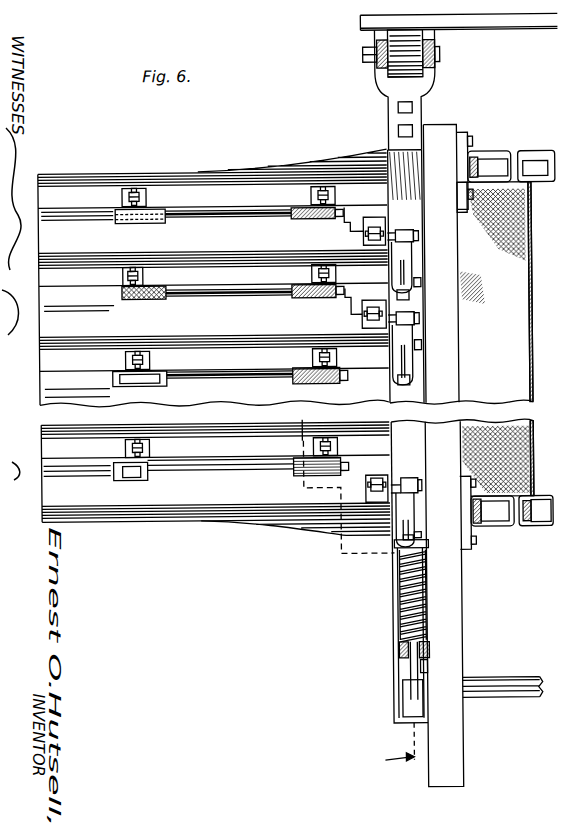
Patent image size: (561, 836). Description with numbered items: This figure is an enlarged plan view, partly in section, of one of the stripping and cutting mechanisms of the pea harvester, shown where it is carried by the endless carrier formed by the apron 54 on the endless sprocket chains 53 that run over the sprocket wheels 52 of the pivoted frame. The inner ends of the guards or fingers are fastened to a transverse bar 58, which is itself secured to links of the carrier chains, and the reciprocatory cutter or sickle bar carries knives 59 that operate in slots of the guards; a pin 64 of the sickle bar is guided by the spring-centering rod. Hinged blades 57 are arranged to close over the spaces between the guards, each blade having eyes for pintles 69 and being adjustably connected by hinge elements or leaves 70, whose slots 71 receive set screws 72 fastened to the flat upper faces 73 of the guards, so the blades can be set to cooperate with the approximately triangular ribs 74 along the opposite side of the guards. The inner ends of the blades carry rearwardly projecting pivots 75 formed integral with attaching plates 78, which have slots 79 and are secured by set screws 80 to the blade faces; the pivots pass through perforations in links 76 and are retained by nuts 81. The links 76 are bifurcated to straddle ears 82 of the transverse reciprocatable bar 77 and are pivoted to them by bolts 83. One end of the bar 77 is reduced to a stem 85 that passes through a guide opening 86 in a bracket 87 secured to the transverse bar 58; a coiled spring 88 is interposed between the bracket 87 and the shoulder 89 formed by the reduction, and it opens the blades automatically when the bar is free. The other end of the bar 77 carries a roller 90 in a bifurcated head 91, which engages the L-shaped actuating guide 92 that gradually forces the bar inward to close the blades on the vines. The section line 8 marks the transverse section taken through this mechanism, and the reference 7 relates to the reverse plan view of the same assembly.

The lever 7 is at (135, 470).
The section line 8 is at (358, 594).
The sprocket wheels 52 is at (513, 242).
The endless sprocket chains 53 is at (510, 150).
The apron 54 is at (520, 422).
The hinged blades 57 is at (248, 491).
The transverse bar 58 is at (455, 598).
The knives 59 is at (342, 158).
The pin 64 is at (510, 682).
The pintles 69 is at (233, 209).
The hinge elements or leaves 70 is at (124, 195).
The slots 71 is at (137, 190).
The set screws 72 is at (148, 200).
The flat upper faces 73 is at (52, 278).
The triangular ribs 74 is at (97, 254).
The pivots 75 is at (394, 228).
The links 76 is at (407, 262).
The transverse reciprocatable bar 77 is at (389, 138).
The attaching plates 78 is at (363, 238).
The slots 79 is at (376, 226).
The set screws 80 is at (366, 230).
The nuts 81 is at (412, 233).
The ears 82 is at (410, 293).
The bolts 83 is at (421, 283).
The reduced portion or stem 85 is at (407, 673).
The guide opening 86 is at (395, 652).
The bracket 87 is at (442, 648).
The coiled spring 88 is at (400, 610).
The shoulder 89 is at (420, 550).
The roller 90 is at (412, 33).
The bifurcated head 91 is at (437, 80).
The actuating guide 92 is at (522, 31).